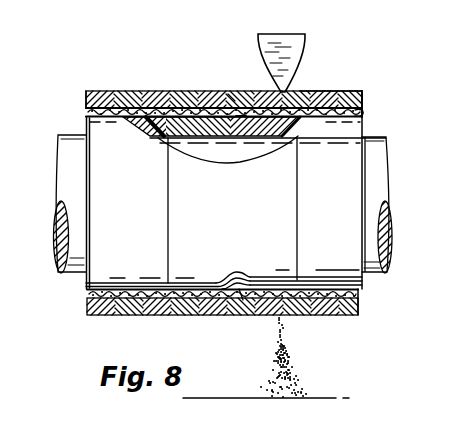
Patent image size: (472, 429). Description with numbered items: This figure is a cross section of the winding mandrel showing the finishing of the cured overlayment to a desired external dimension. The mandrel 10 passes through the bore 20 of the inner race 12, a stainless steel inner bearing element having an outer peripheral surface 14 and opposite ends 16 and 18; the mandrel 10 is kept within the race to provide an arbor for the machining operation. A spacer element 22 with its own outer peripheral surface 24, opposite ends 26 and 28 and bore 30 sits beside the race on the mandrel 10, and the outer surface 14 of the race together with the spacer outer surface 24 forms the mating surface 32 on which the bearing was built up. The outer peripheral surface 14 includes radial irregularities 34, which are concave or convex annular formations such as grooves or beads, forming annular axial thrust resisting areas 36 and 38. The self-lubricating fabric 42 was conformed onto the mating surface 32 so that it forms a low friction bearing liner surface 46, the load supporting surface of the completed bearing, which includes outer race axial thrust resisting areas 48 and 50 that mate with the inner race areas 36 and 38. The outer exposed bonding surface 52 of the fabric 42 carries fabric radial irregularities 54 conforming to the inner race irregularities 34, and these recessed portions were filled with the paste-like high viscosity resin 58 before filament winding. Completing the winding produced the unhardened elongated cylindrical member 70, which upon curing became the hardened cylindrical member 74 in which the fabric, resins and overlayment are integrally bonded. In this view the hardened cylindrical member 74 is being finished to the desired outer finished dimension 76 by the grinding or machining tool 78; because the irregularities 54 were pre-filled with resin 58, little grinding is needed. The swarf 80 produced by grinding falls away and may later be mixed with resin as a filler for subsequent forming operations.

The mandrel 10 is at (65, 144).
The inner bearing element or race 12 is at (158, 313).
The outer peripheral surface 14 is at (183, 108).
The end 16 is at (168, 186).
The end 18 is at (306, 211).
The bore 20 is at (203, 139).
The spacer element 22 is at (86, 285).
The outer peripheral surface 24 is at (109, 108).
The end 26 is at (298, 190).
The end 28 is at (177, 215).
The bore 30 is at (162, 140).
The mating surface 32 is at (351, 110).
The radial irregularity 34 is at (242, 117).
The axial thrust resisting area 36 is at (233, 283).
The axial thrust resisting area 38 is at (241, 292).
The fabric 42 is at (366, 110).
The bearing liner surface 46 is at (363, 124).
The outer race axial thrust resisting area 48 is at (233, 276).
The outer race axial thrust resisting area 50 is at (253, 278).
The outer exposed bonding surface 52 is at (322, 95).
The fabric radial irregularity 54 is at (232, 97).
The high viscosity resin 58 is at (256, 156).
The unhardened elongated cylindrical member 70 is at (354, 309).
The hardened cylindrical member 74 is at (80, 103).
The outer finished dimension 76 is at (144, 95).
The grinding or machining tool 78 is at (289, 42).
The swarf 80 is at (298, 378).